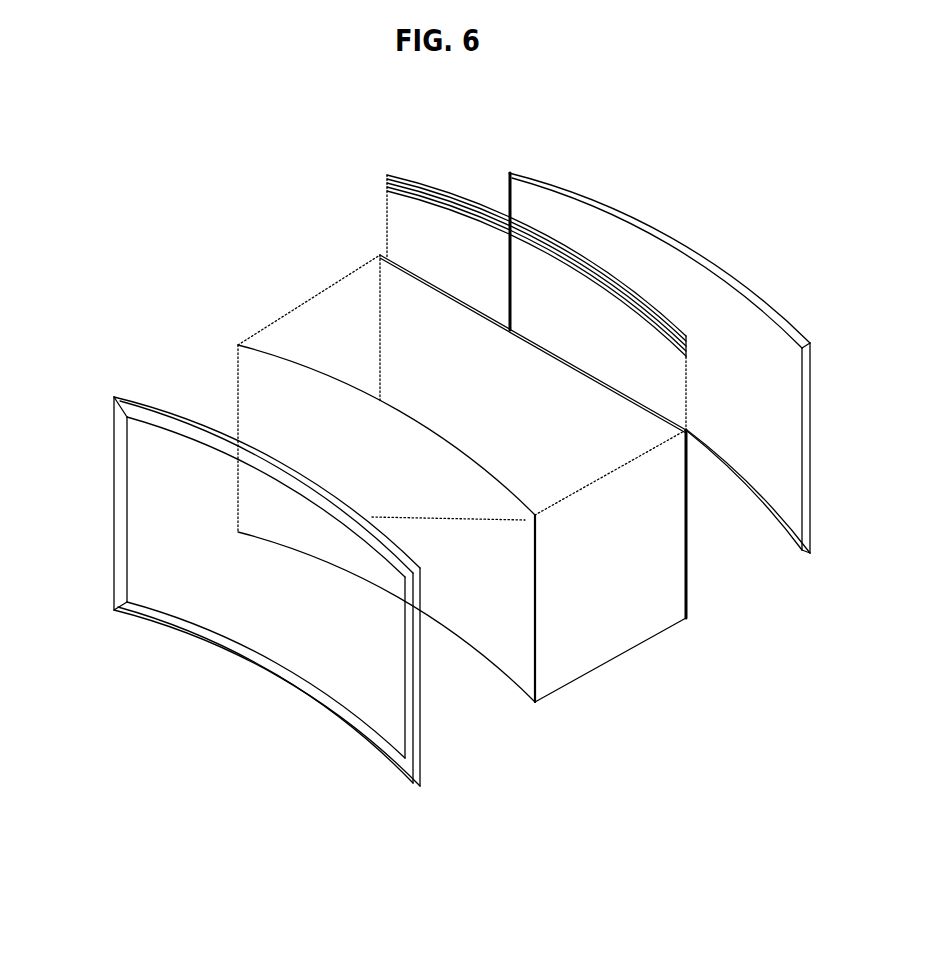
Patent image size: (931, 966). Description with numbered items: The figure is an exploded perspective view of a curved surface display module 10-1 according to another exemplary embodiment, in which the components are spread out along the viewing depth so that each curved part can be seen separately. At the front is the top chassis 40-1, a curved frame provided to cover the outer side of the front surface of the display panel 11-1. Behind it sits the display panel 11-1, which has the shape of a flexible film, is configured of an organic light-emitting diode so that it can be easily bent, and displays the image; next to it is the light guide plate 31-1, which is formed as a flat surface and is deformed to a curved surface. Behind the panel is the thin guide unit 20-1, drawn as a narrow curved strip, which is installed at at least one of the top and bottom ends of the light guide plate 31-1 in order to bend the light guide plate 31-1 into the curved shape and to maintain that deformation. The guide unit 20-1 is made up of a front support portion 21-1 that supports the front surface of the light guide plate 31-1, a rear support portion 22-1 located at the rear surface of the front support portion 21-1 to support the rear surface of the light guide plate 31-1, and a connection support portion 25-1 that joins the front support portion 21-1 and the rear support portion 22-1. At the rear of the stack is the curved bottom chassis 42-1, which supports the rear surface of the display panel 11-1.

The display module 10-1 is at (308, 133).
The display panel 11-1 is at (523, 674).
The guide unit 20-1 is at (463, 186).
The front support portion 21-1 is at (678, 347).
The rear support portion 22-1 is at (687, 353).
The connection support portion 25-1 is at (682, 340).
The light guide plate 31-1 is at (669, 596).
The top chassis 40-1 is at (114, 415).
The bottom chassis 42-1 is at (715, 268).